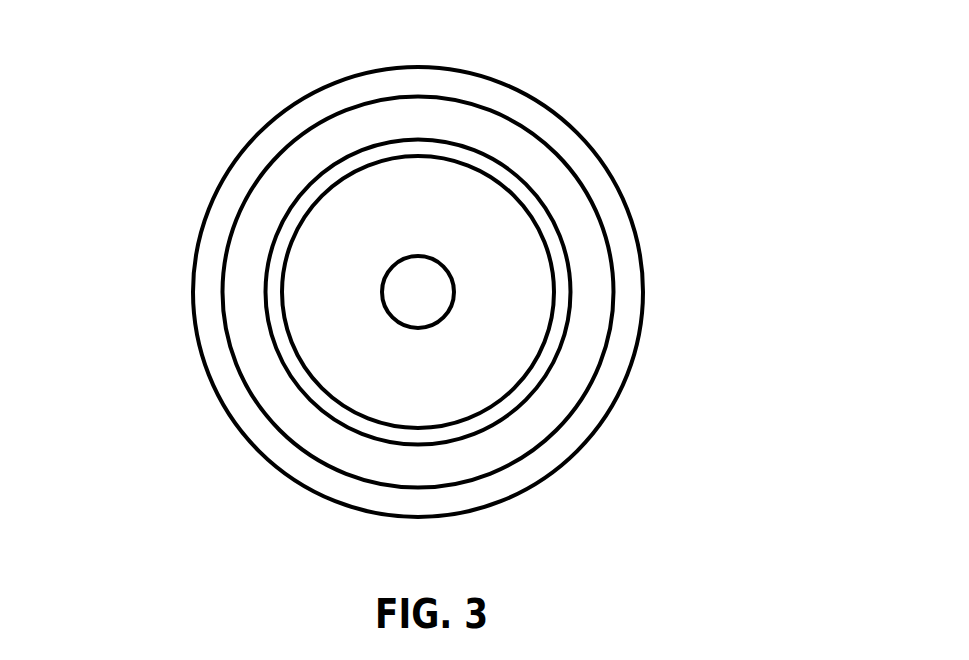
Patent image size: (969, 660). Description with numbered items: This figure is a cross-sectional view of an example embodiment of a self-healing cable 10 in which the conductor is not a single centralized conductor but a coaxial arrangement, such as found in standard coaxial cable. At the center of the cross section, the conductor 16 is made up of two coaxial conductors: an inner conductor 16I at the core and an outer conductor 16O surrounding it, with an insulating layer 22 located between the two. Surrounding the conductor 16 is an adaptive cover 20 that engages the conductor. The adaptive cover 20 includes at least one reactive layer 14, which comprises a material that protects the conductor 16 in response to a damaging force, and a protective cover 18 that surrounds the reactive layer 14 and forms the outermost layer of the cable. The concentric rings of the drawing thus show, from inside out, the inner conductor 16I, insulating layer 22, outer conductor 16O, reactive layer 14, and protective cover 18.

The self-healing cable 10 is at (195, 62).
The reactive layer 14 is at (552, 197).
The conductor 16 is at (782, 213).
The inner conductor 16I is at (453, 285).
The outer conductor 16O is at (570, 300).
The protective cover 18 is at (552, 140).
The adaptive cover 20 is at (753, 70).
The insulating layer 22 is at (495, 328).